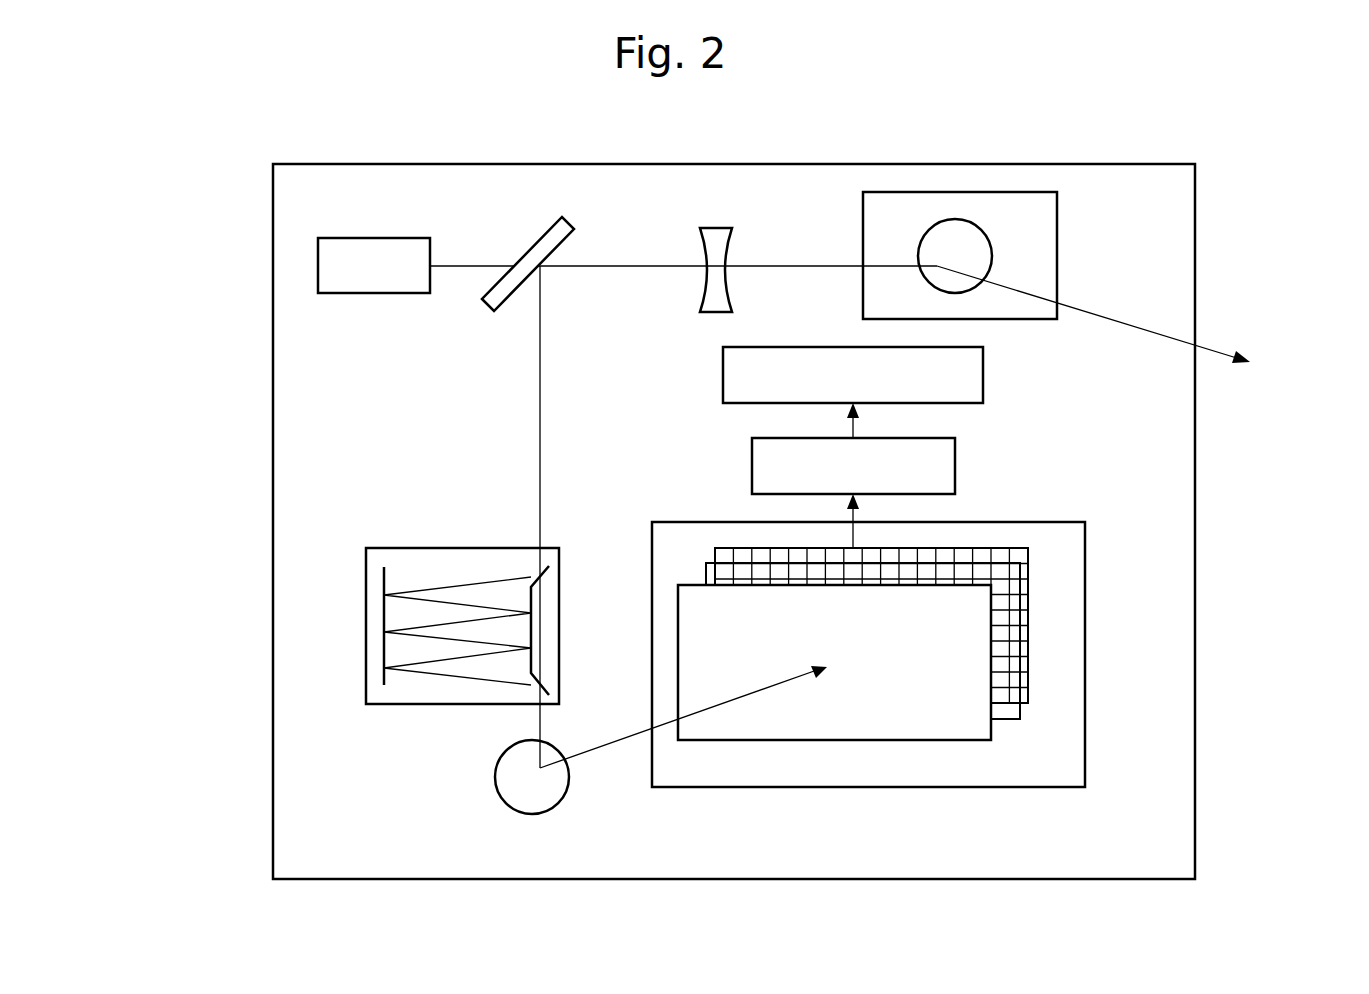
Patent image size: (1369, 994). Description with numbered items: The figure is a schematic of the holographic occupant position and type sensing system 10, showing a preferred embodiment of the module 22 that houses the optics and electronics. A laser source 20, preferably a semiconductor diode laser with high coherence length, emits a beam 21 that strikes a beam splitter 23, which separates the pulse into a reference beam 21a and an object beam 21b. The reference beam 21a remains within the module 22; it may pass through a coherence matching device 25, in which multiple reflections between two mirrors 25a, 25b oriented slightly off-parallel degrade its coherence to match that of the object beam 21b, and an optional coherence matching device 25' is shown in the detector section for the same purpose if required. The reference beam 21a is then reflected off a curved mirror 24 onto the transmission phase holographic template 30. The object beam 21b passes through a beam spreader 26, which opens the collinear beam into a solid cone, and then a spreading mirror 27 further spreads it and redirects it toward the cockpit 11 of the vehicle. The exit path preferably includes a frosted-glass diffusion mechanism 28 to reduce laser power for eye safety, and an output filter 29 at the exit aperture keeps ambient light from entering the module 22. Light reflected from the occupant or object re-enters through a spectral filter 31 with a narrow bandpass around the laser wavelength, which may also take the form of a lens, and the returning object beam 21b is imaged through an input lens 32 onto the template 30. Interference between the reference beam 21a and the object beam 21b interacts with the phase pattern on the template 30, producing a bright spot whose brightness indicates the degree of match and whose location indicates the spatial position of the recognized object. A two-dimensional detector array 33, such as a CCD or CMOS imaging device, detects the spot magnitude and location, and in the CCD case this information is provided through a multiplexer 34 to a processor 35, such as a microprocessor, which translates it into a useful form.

The holographic occupant position and type sensing system 10 is at (669, 502).
The cockpit 11 is at (1275, 386).
The laser source 20 is at (363, 238).
The beam 21 is at (470, 265).
The reference beam 21a is at (613, 743).
The object beam 21b is at (1117, 327).
The module 22 is at (273, 283).
The beam splitter 23 is at (562, 221).
The curved mirror 24 is at (528, 815).
The coherence matching device 25 is at (459, 605).
The mirror 25a is at (381, 580).
The mirror 25b is at (531, 632).
The optional coherence matching device 25' is at (914, 654).
The beam spreader 26 is at (717, 228).
The spreading mirror 27 is at (974, 255).
The diffusion mechanism 28 is at (1003, 255).
The output filter 29 is at (1003, 255).
The transmission phase holographic template 30 is at (991, 740).
The spectral filter 31 is at (914, 654).
The input lens 32 is at (1020, 712).
The two-dimensional detector array 33 is at (1030, 555).
The multiplexer 34 is at (957, 463).
The processor 35 is at (985, 370).